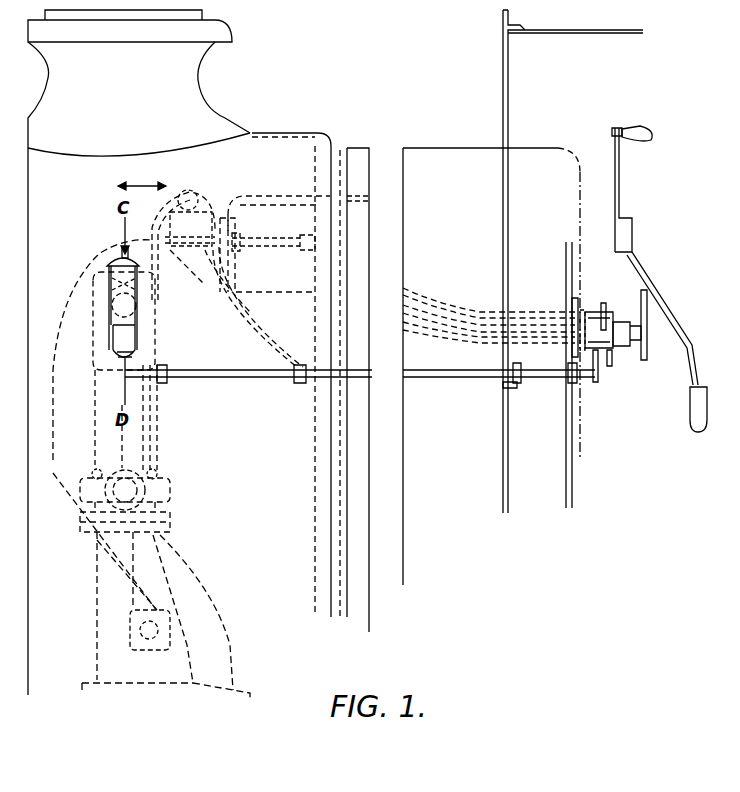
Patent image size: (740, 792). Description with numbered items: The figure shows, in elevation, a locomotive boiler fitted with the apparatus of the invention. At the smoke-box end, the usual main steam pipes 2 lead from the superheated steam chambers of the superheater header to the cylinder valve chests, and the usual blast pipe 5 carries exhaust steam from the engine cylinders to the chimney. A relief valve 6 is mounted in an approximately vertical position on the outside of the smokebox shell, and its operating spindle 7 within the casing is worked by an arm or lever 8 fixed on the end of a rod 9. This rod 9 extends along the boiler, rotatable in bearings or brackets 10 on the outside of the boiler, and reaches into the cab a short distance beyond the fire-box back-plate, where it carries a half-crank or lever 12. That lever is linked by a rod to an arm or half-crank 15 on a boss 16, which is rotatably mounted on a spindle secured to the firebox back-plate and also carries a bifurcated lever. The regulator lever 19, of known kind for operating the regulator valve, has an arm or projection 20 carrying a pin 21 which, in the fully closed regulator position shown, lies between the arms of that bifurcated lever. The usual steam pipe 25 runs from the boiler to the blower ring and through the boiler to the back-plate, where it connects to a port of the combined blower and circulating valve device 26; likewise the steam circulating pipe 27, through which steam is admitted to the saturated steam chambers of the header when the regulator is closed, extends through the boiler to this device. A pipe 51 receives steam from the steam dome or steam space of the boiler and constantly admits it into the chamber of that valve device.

The main steam pipes 2 is at (60, 485).
The blast pipe 5 is at (97, 605).
The relief valve 6 is at (118, 275).
The operating spindle 7 is at (118, 357).
The arm or lever 8 is at (122, 378).
The rod 9 is at (258, 378).
The bearings or brackets 10 is at (163, 367).
The half-crank or lever 12 is at (596, 382).
The arm or half-crank 15 is at (609, 366).
The boss 16 is at (628, 350).
The regulator lever 19 is at (625, 205).
The arm or projection 20 is at (640, 292).
The pin 21 is at (641, 318).
The steam pipe 25 is at (355, 196).
The combined blower and circulating valve device 26 is at (155, 470).
The steam circulating pipe 27 is at (263, 332).
The pipe 51 is at (433, 300).